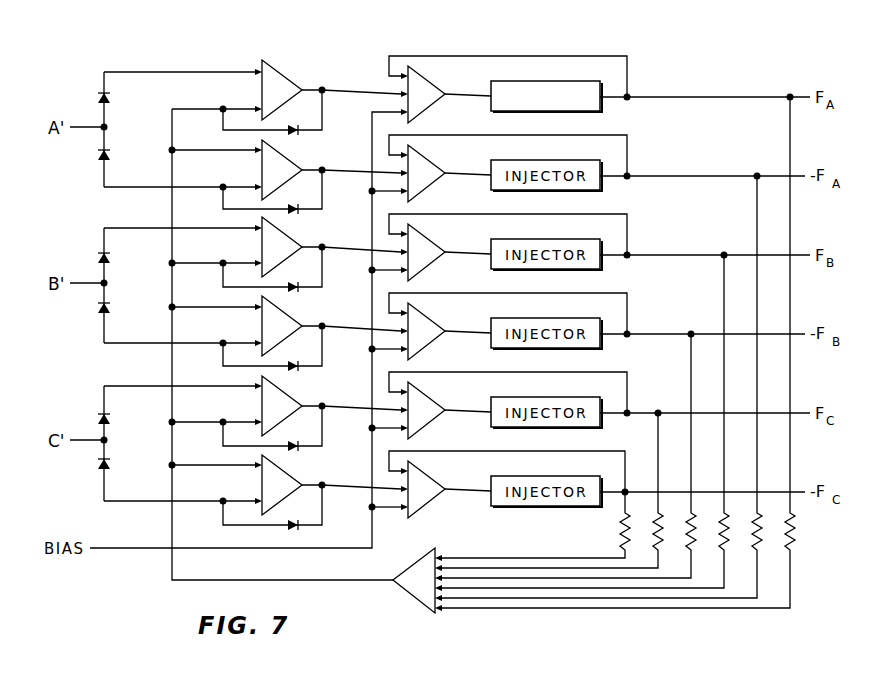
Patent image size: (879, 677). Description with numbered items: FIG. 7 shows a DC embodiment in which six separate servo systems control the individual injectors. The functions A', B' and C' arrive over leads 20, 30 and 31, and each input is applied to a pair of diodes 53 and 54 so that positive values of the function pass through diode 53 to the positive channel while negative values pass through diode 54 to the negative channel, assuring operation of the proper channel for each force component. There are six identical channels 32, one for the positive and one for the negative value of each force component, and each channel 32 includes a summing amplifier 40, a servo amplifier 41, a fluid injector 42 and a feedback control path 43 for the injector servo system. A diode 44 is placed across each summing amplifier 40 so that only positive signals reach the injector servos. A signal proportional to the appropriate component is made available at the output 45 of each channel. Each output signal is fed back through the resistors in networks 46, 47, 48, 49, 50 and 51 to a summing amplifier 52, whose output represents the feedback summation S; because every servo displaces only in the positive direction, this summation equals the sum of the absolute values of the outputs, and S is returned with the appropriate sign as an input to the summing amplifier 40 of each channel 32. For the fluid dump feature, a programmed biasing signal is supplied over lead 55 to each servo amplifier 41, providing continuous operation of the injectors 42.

The lead 20 is at (88, 124).
The diode 53 is at (110, 101).
The diode 54 is at (112, 153).
The lead 30 is at (87, 281).
The lead 31 is at (87, 438).
The channel 32 is at (368, 51).
The summing amplifier 40 is at (291, 80).
The servo amplifier 41 is at (433, 82).
The fluid injector 42 is at (566, 83).
The feedback control path 43 is at (437, 54).
The diode 44 is at (300, 129).
The output 45 is at (692, 97).
The feedback circuit 46 is at (789, 147).
The feedback circuit 47 is at (757, 230).
The feedback circuit 48 is at (724, 299).
The feedback circuit 49 is at (691, 376).
The feedback circuit 50 is at (658, 436).
The feedback circuit 51 is at (620, 505).
The summing amplifier 52 is at (420, 556).
The lead 55 is at (357, 92).